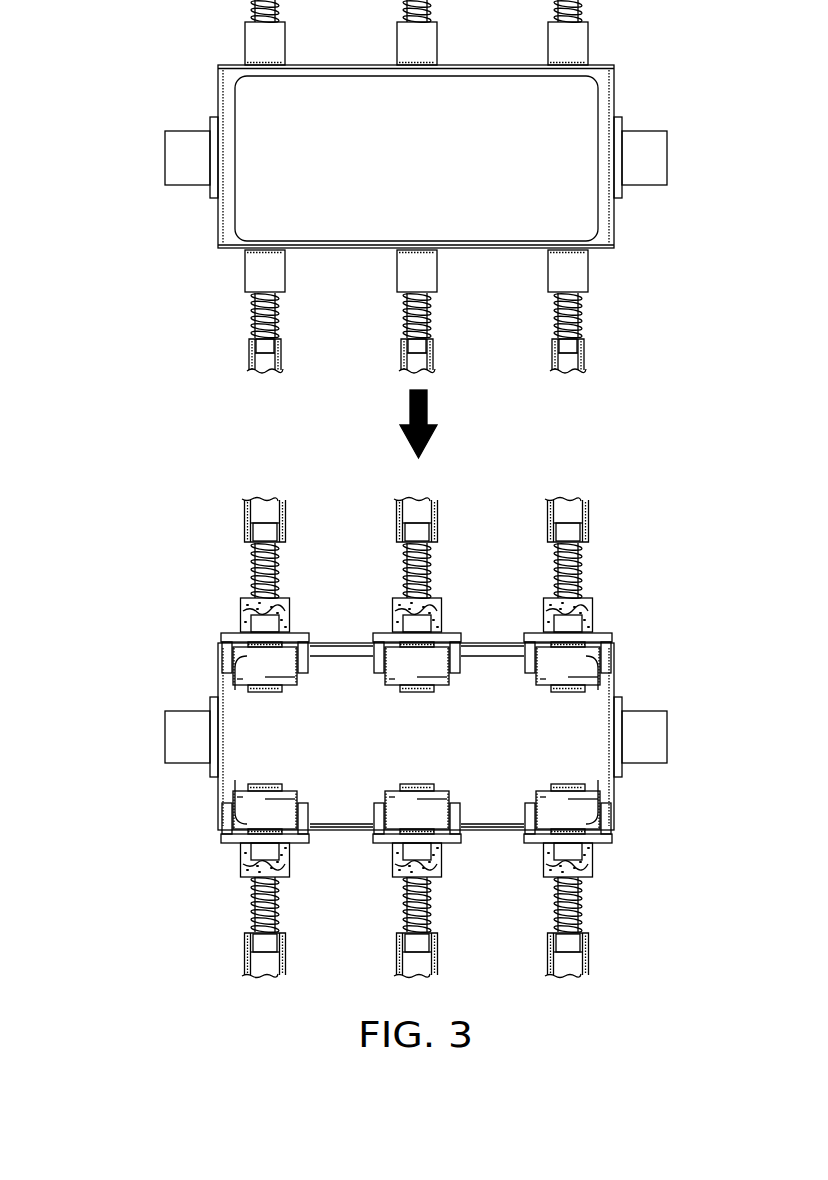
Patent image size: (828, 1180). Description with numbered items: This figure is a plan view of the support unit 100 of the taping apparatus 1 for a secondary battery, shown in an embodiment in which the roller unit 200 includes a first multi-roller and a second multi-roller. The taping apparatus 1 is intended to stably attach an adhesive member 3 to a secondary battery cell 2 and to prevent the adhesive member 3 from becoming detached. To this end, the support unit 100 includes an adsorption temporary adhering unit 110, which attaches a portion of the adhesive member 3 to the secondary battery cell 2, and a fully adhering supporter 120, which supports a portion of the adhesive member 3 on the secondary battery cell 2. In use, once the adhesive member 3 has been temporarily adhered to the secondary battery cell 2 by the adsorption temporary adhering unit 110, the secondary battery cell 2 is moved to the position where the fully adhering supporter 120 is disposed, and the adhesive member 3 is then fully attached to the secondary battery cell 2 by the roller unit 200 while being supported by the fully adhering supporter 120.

The taping apparatus 1 is at (97, 435).
The secondary battery cell 2 is at (214, 229).
The adhesive member 3 is at (590, 252).
The support unit 100 is at (152, 395).
The adsorption temporary adhering unit 110 is at (240, 359).
The fully adhering supporter 120 is at (240, 522).
The roller unit 200 is at (229, 628).